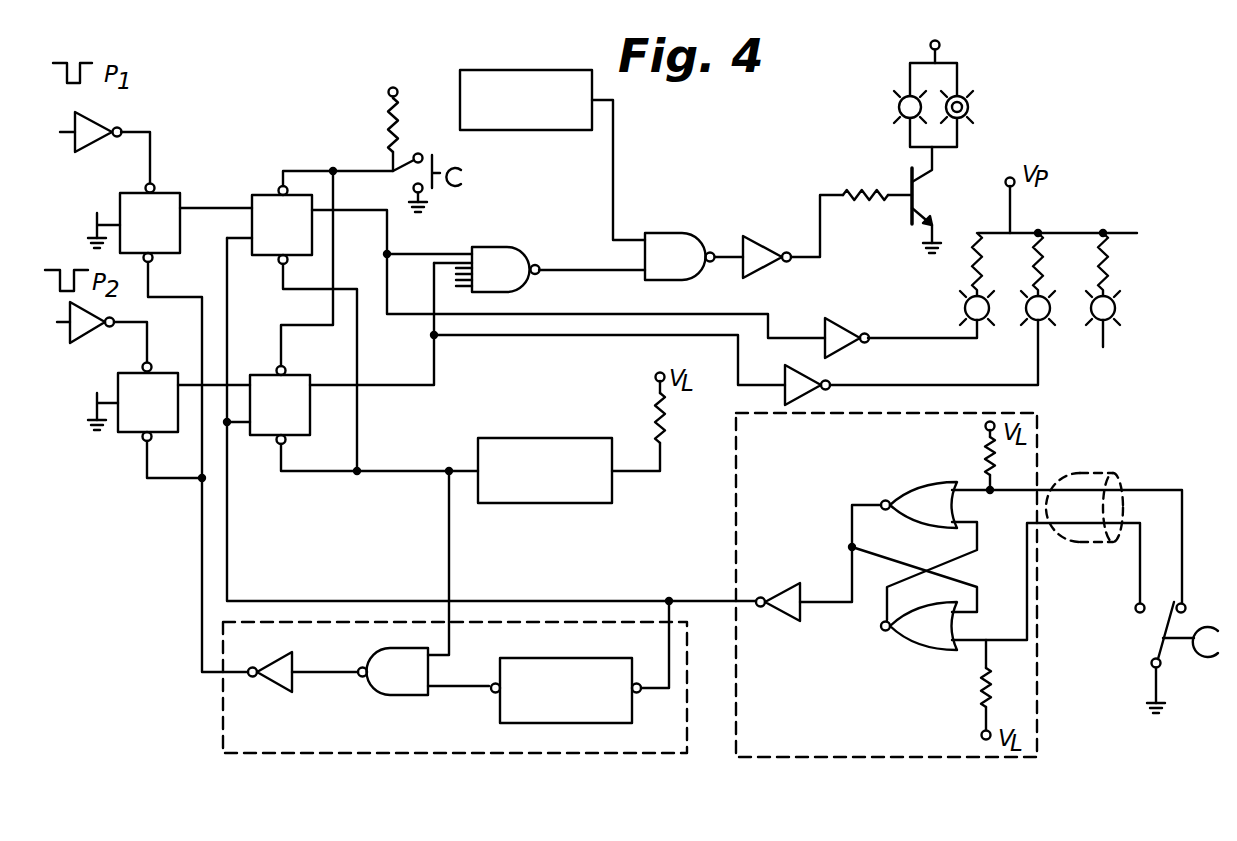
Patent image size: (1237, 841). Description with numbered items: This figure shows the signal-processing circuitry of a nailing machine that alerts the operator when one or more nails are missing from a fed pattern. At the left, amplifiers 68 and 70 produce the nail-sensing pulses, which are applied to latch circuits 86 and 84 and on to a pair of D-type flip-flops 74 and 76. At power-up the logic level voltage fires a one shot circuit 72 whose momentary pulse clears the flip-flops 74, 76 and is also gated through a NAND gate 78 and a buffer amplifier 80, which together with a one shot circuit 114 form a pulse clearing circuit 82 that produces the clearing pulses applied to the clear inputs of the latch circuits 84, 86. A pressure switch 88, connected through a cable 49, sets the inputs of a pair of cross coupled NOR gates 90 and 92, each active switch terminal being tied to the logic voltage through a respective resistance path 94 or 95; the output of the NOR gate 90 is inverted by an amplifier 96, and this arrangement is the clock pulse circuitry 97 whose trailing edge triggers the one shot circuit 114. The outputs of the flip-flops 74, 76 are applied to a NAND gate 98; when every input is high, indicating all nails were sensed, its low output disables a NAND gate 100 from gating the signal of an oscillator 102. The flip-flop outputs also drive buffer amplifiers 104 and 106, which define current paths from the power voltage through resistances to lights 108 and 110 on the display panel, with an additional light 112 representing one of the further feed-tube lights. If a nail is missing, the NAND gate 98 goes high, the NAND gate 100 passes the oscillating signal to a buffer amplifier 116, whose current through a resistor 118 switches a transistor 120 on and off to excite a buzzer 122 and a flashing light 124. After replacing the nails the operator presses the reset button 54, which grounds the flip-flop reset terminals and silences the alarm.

The cable 49 is at (1105, 471).
The reset button 54 is at (460, 175).
The amplifier 68 is at (98, 124).
The amplifier 70 is at (87, 334).
The one shot circuit 72 is at (563, 438).
The D-type flip-flop 74 is at (262, 194).
The D-type flip-flop 76 is at (297, 374).
The NAND gate 78 is at (418, 698).
The buffer amplifier 80 is at (272, 689).
The pulse clearing circuit 82 is at (653, 756).
The latch circuit 84 is at (167, 371).
The latch circuit 86 is at (167, 193).
The pressure switch 88 is at (1173, 658).
The NOR gate 90 is at (945, 468).
The NOR gate 92 is at (940, 652).
The resistance path 94 is at (998, 453).
The resistance path 95 is at (991, 689).
The amplifier 96 is at (785, 622).
The clock pulse circuitry 97 is at (952, 760).
The NAND gate 98 is at (500, 246).
The NAND gate 100 is at (678, 233).
The oscillator 102 is at (538, 130).
The buffer amplifier 104 is at (848, 319).
The buffer amplifier 106 is at (815, 378).
The light 108 is at (963, 303).
The light 110 is at (1031, 325).
The light 112 is at (1091, 328).
The one shot circuit 114 is at (585, 722).
The buffer amplifier 116 is at (768, 228).
The resistor 118 is at (862, 190).
The transistor 120 is at (917, 196).
The buzzer 122 is at (971, 101).
The flashing light 124 is at (897, 106).